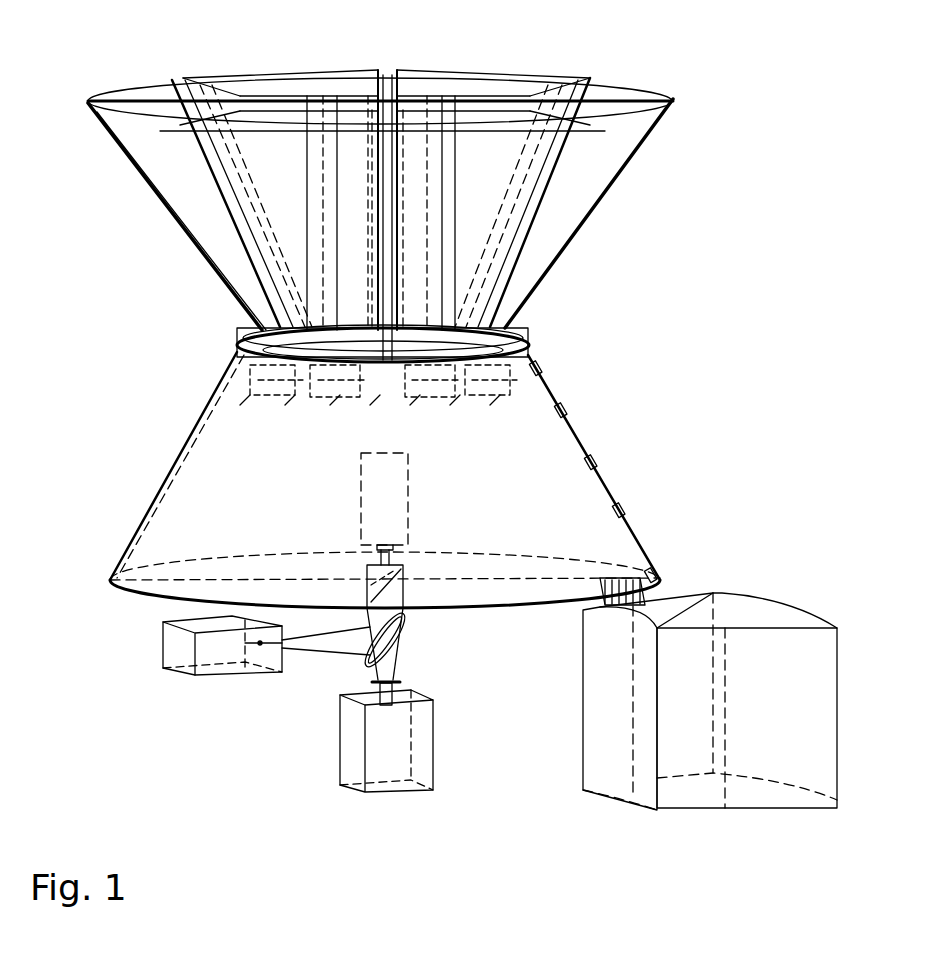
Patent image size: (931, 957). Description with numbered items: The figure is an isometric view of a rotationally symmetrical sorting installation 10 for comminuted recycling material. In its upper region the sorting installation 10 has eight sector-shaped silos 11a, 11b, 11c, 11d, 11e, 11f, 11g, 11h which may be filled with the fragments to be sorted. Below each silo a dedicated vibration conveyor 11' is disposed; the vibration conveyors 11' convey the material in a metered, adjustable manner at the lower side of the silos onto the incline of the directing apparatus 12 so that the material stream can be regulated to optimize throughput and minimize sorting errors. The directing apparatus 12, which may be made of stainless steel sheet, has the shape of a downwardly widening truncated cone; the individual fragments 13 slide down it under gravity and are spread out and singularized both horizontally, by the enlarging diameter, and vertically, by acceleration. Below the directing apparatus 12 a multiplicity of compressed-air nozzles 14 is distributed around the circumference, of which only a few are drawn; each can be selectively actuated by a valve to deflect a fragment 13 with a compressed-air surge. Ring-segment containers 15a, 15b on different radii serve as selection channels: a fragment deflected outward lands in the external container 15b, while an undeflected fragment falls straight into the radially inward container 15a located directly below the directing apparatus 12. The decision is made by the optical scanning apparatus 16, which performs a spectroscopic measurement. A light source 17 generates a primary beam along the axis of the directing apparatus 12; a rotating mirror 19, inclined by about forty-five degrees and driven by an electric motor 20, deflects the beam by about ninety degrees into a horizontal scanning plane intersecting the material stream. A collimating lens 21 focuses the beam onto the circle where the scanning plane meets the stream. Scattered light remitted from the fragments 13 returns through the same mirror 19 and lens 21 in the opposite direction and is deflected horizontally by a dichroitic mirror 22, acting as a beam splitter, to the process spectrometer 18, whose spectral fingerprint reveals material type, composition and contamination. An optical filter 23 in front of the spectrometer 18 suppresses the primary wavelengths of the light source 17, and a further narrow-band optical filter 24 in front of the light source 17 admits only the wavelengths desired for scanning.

The sorting installation 10 is at (688, 310).
The sector-shaped silo 11a is at (545, 205).
The sector-shaped silo 11b is at (598, 172).
The sector-shaped silo 11c is at (620, 88).
The sector-shaped silo 11d is at (452, 78).
The sector-shaped silo 11e is at (338, 78).
The sector-shaped silo 11f is at (145, 90).
The sector-shaped silo 11g is at (160, 178).
The sector-shaped silo 11h is at (277, 198).
The vibration conveyor 11' is at (378, 415).
The directing apparatus 12 is at (197, 465).
The fragments 13 is at (618, 512).
The compressed-air nozzles 14 is at (620, 600).
The radially inward container 15a is at (635, 795).
The external container 15b is at (782, 605).
The optical scanning apparatus 16 is at (255, 748).
The light source 17 is at (425, 748).
The process spectrometer 18 is at (163, 645).
The rotating deflection element (mirror) 19 is at (368, 585).
The electric motor 20 is at (398, 490).
The collimating lens 21 is at (372, 618).
The dichroitic mirror 22 is at (405, 642).
The optical filter 23 is at (282, 630).
The narrow-band optical filter 24 is at (343, 707).